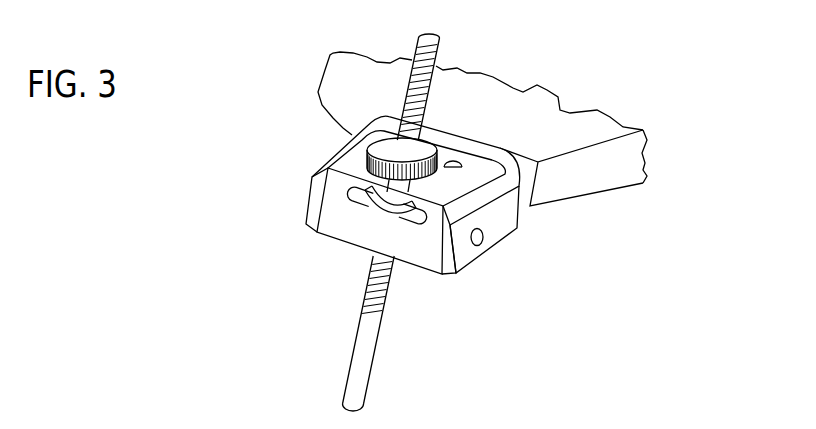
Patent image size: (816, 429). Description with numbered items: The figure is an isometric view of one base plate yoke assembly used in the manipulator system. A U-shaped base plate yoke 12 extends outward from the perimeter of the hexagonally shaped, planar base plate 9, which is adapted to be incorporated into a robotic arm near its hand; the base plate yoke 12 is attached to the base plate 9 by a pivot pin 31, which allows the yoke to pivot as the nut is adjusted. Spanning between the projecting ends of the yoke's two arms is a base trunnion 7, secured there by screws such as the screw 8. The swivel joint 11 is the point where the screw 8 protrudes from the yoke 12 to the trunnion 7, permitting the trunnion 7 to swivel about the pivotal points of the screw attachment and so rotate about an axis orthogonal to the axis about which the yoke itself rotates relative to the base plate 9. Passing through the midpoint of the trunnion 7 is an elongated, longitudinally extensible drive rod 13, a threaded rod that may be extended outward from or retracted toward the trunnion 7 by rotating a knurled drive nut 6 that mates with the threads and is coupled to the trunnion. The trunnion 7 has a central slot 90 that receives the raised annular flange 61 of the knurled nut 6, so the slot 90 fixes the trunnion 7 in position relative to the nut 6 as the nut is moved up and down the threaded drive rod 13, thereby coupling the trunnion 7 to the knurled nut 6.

The drive nut 6 is at (366, 148).
The base trunnion 7 is at (331, 246).
The screw 8 is at (486, 247).
The base plate 9 is at (560, 92).
The swivel joint 11 is at (447, 280).
The base plate yoke 12 is at (520, 227).
The drive rod 13 is at (377, 369).
The pivot pin 31 is at (452, 158).
The raised annular flange 61 is at (372, 218).
The central slot 90 is at (343, 200).